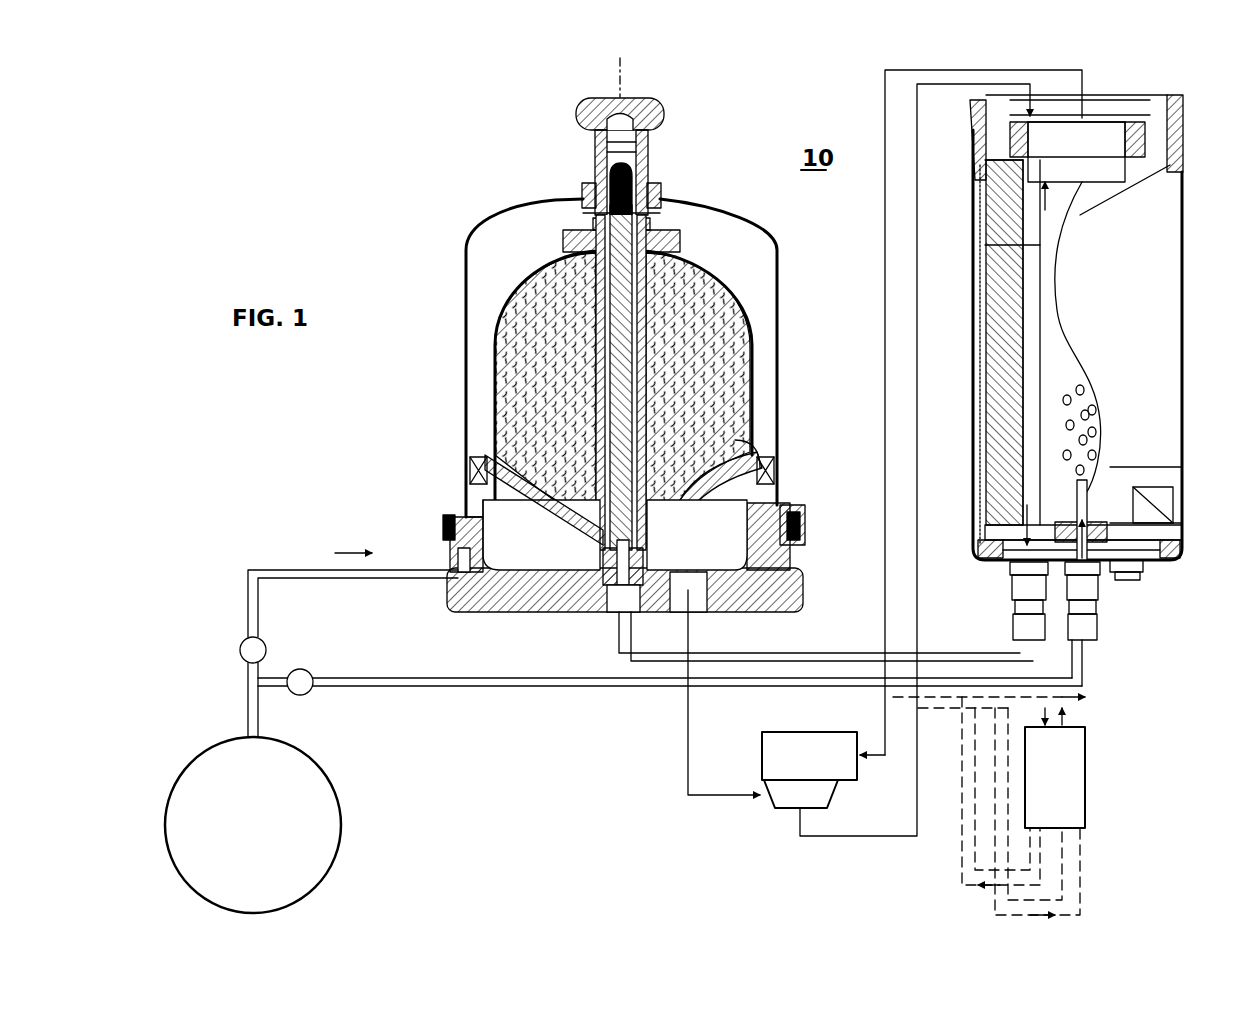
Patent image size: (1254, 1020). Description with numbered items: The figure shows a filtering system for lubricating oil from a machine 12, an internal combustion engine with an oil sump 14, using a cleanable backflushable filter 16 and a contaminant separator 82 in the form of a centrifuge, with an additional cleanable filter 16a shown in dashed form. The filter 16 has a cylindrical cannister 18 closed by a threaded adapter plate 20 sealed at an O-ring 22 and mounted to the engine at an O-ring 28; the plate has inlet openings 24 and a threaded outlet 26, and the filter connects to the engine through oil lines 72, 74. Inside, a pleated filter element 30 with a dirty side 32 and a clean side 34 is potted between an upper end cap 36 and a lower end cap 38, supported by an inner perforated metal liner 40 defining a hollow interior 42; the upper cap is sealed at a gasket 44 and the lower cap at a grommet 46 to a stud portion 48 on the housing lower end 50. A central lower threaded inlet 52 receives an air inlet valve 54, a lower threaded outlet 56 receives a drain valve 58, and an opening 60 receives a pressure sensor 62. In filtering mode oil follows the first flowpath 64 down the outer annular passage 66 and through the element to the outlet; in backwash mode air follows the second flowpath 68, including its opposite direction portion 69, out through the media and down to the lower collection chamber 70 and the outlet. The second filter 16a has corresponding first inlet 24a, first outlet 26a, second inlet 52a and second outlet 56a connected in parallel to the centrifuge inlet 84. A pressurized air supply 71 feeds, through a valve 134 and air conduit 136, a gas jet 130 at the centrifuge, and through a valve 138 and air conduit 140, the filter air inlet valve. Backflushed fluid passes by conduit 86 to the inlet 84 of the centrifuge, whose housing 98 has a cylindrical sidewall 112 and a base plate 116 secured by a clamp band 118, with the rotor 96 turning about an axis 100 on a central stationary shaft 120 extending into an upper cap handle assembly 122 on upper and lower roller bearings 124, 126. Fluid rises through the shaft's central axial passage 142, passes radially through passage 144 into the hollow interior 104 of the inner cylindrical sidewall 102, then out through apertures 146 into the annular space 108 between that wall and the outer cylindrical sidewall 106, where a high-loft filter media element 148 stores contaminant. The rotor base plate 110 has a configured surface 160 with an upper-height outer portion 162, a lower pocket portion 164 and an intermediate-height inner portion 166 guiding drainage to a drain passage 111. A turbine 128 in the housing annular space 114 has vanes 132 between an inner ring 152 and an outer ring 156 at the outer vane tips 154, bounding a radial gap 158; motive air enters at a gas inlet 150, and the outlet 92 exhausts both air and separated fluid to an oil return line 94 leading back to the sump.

The machine 12 is at (792, 734).
The oil sump 14 is at (828, 800).
The cleanable backflushable filter 16 is at (1190, 318).
The cleanable filter 16a is at (1090, 790).
The cylindrical cannister 18 is at (974, 255).
The adapter plate 20 is at (972, 125).
The O-ring 22 is at (1185, 142).
The openings 24 is at (985, 150).
The first inlet 24a is at (1045, 730).
The outlet 26 is at (1120, 125).
The first outlet 26a is at (1064, 712).
The O-ring 28 is at (985, 97).
The filter element 30 is at (995, 370).
The upstream dirty side 32 is at (990, 332).
The downstream clean side 34 is at (1025, 436).
The upper end cap 36 is at (1042, 186).
The lower end cap 38 is at (985, 512).
The inner perforated metal liner 40 is at (1030, 336).
The hollow interior 42 is at (1043, 403).
The gasket 44 is at (1035, 160).
The grommet 46 is at (1110, 500).
The central upstanding stud portion 48 is at (1095, 472).
The lower end 50 is at (975, 564).
The central lower threaded inlet 52 is at (1098, 562).
The second inlet 52a is at (1090, 830).
The air inlet valve 54 is at (1098, 632).
The lower threaded outlet 56 is at (1012, 566).
The second outlet 56a is at (1045, 828).
The drain valve 58 is at (1012, 624).
The lower threaded opening 60 is at (1150, 568).
The pressure sensor 62 is at (1140, 580).
The first flowpath 64 is at (1030, 118).
The outer annular passage 66 is at (979, 290).
The second flowpath 68 is at (1020, 266).
The opposite direction portion 69 is at (1030, 470).
The lower collection chamber 70 is at (978, 546).
The pressurized air supply 71 is at (342, 830).
The oil line 72 is at (888, 72).
The oil line 74 is at (1082, 80).
The contaminant separator 82 is at (468, 248).
The inlet 84 is at (610, 612).
The conduit 86 is at (648, 656).
The outlet 92 is at (690, 610).
The oil return line 94 is at (690, 722).
The rotor 96 is at (752, 280).
The housing 98 is at (572, 222).
The axis 100 is at (622, 75).
The inner cylindrical sidewall 102 is at (652, 280).
The hollow interior 104 is at (645, 330).
The outer cylindrical sidewall 106 is at (760, 348).
The annular space 108 is at (758, 375).
The base plate 110 is at (727, 520).
The drain passage 111 is at (672, 528).
The cylindrical sidewall 112 is at (780, 390).
The annular space 114 is at (785, 420).
The base plate 116 is at (806, 584).
The clamp band 118 is at (800, 528).
The central stationary shaft 120 is at (655, 228).
The upper cap handle assembly 122 is at (652, 172).
The upper roller bearing 124 is at (660, 204).
The lower roller bearing 126 is at (592, 545).
The turbine 128 is at (780, 458).
The gas jet 130 is at (462, 502).
The turbine vanes 132 is at (472, 468).
The valve 134 is at (240, 650).
The air conduit 136 is at (270, 568).
The valve 138 is at (308, 696).
The air conduit 140 is at (404, 688).
The central axial passage 142 is at (562, 556).
The passage 144 is at (560, 531).
The apertures 146 is at (706, 274).
The filter media element 148 is at (488, 360).
The inlet 150 is at (462, 576).
The inner ring 152 is at (762, 452).
The outer vane tips 154 is at (476, 462).
The outer ring 156 is at (776, 470).
The radial gap 158 is at (770, 492).
The configured surface 160 is at (755, 440).
The upper-height outer portion 162 is at (488, 452).
The lower pocket portion 164 is at (556, 526).
The intermediate-height inner portion 166 is at (522, 402).